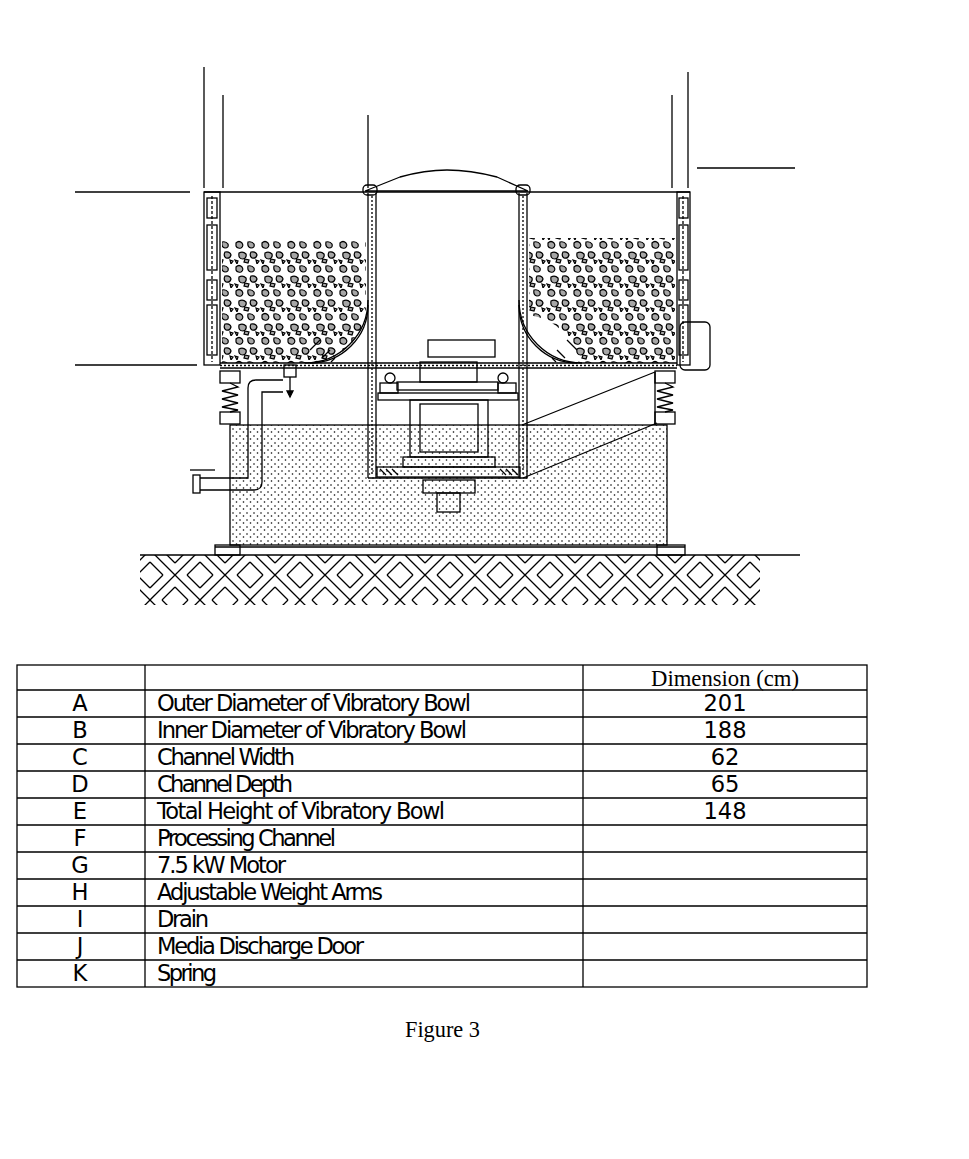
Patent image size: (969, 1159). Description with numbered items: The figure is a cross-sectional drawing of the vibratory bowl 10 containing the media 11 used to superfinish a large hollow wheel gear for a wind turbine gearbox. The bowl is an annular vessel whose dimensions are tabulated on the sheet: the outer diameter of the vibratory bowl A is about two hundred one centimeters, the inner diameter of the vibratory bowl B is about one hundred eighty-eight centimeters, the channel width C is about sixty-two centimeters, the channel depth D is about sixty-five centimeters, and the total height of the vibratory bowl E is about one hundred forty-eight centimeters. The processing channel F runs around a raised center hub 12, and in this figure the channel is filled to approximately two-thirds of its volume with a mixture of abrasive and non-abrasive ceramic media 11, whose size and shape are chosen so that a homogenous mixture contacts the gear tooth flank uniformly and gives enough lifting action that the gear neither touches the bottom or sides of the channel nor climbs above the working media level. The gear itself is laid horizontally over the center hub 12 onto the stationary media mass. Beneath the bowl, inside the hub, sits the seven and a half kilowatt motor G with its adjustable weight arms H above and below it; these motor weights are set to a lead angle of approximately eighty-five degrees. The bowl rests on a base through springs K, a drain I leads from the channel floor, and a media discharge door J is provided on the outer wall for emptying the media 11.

The vibratory bowl 10 is at (687, 225).
The mixture of abrasive and non-abrasive ceramic media 11 is at (633, 302).
The center hub 12 is at (492, 177).
The outer diameter of vibratory bowl A is at (212, 82).
The inner diameter of vibratory bowl B is at (231, 105).
The channel width C is at (231, 132).
The channel depth D is at (95, 200).
The total height of vibratory bowl E is at (770, 547).
The processing channel F is at (292, 278).
The 7.5 kW motor G is at (448, 433).
The adjustable weight arms H is at (452, 334).
The drain I is at (212, 494).
The media discharge door J is at (700, 378).
The spring K is at (213, 400).